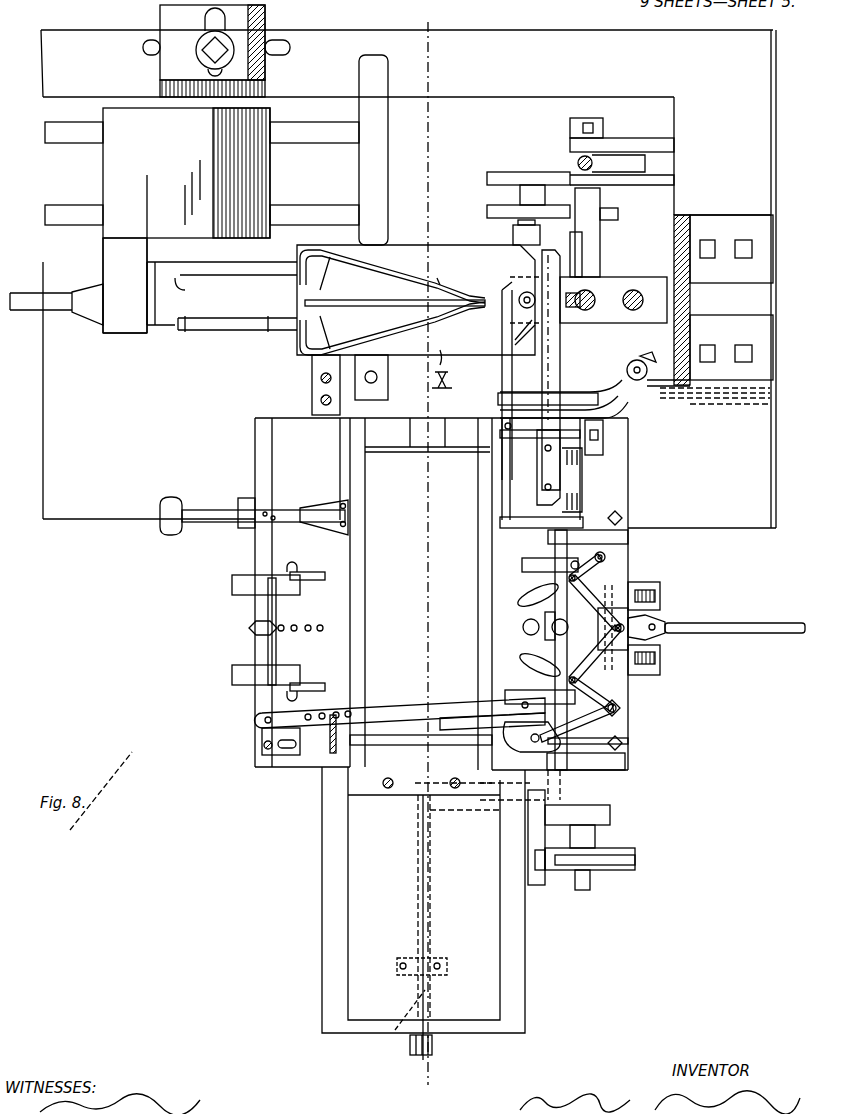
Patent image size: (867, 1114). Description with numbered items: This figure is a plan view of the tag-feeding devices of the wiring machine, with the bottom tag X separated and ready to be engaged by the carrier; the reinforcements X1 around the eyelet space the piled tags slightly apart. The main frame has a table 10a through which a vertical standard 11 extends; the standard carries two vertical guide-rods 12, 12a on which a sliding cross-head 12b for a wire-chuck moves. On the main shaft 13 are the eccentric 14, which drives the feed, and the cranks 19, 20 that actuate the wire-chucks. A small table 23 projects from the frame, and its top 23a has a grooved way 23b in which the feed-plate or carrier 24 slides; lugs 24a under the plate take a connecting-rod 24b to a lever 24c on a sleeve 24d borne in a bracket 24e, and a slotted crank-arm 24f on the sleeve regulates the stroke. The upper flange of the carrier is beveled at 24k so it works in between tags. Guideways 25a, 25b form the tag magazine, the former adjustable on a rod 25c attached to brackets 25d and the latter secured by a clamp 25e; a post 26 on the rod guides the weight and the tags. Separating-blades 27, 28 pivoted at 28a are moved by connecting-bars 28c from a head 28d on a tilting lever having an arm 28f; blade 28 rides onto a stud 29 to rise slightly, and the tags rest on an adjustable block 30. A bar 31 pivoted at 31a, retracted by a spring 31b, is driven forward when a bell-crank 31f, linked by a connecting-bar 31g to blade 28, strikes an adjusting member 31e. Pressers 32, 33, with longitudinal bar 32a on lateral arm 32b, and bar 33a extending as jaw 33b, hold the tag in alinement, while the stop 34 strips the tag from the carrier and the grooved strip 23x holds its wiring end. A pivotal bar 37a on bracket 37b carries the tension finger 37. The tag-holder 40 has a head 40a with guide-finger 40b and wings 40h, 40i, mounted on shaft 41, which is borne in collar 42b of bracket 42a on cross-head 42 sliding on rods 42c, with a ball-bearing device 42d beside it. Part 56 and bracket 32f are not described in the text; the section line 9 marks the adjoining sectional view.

The section line 9 is at (423, 555).
The table 10a is at (408, 279).
The vertical standard 11 is at (688, 218).
The vertical guide-rod 12 is at (595, 292).
The vertical guide-rod 12a is at (636, 292).
The sliding cross-head 12b is at (618, 310).
The main shaft 13 is at (592, 880).
The eccentric 14 is at (637, 858).
The crank 19 is at (520, 193).
The crank 20 is at (640, 162).
The small table 23 is at (262, 760).
The table-top 23a is at (345, 851).
The grooved way 23b is at (345, 968).
The grooved strip 23x is at (560, 360).
The feed-plate or carrier 24 is at (459, 927).
The lugs 24a is at (448, 962).
The connecting-rod 24b is at (395, 1028).
The lever 24c is at (433, 1047).
The sleeve 24d is at (528, 820).
The bracket 24e is at (565, 782).
The slotted crank-arm 24f is at (545, 888).
The bevel 24k is at (424, 748).
The guideways 25a is at (628, 538).
The guideways 25b is at (305, 572).
The rod 25c is at (600, 735).
The brackets 25d is at (612, 762).
The clamp 25e is at (262, 607).
The vertical rod or post 26 is at (595, 592).
The separating-blade 27 is at (592, 690).
The separating-blade 28 is at (606, 556).
The pivot 28a is at (602, 520).
The connecting-bars 28c is at (640, 641).
The head 28d is at (633, 628).
The arm 28f is at (735, 623).
The stud 29 is at (518, 598).
The adjustable block 30 is at (523, 624).
The bar 31 is at (382, 708).
The pivot 31a is at (262, 722).
The spring 31b is at (328, 748).
The adjusting member 31e is at (492, 720).
The bell-crank or lever 31f is at (515, 748).
The connecting-bar 31g is at (620, 712).
The presser 32 is at (345, 441).
The longitudinal bar 32a is at (340, 500).
The lateral arm 32b is at (282, 508).
The bracket 32f is at (246, 498).
The pivoted arm 33 is at (502, 462).
The bar 33a is at (505, 500).
The jaw 33b is at (500, 387).
The stop or beveled part 34 is at (312, 370).
The tension device or finger 37 is at (500, 288).
The pivotal bar 37a is at (638, 392).
The bracket 37b is at (715, 398).
The tag-holder 40 is at (258, 313).
The head 40a is at (207, 313).
The guide-finger 40b is at (380, 300).
The wire wings 40h is at (443, 288).
The wings 40i is at (328, 322).
The shaft 41 is at (33, 310).
The sliding cross-head 42 is at (186, 220).
The bracket 42a is at (115, 247).
The collar or box 42b is at (128, 333).
The rods 42c is at (312, 143).
The ball-bearing device 42d is at (88, 320).
The box 56 is at (265, 17).
The tag X is at (442, 369).
The reinforcements X1 is at (528, 290).